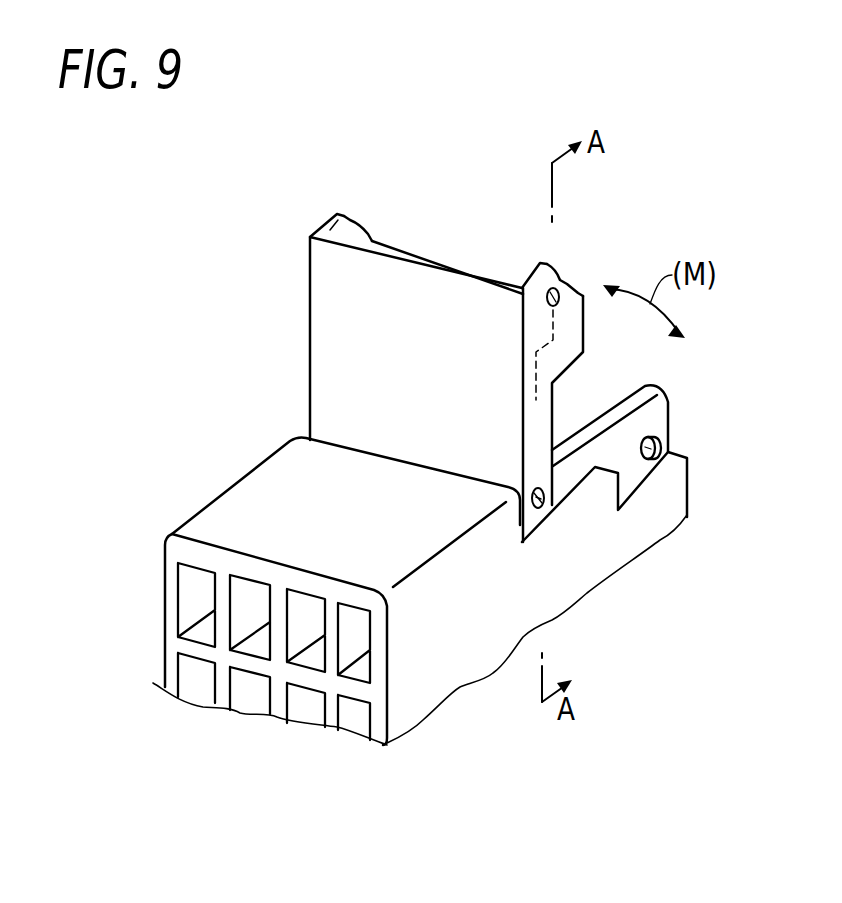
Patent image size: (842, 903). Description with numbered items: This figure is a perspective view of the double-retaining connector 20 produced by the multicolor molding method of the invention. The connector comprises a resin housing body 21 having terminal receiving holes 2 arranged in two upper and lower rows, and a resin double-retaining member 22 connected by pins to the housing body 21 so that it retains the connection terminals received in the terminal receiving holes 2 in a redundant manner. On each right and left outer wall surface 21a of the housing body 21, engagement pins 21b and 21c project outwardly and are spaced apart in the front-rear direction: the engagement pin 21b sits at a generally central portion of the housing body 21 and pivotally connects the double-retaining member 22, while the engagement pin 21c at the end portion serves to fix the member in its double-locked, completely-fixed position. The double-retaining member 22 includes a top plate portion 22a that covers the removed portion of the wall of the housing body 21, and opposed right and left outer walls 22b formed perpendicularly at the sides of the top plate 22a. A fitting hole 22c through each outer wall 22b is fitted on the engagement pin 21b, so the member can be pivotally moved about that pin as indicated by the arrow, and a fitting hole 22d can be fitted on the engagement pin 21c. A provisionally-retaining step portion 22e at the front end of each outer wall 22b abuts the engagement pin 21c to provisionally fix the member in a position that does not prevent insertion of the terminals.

The terminal receiving holes 2 is at (197, 672).
The double-retaining connector 20 is at (231, 488).
The housing body 21 is at (445, 683).
The outer wall surface 21a is at (523, 610).
The engagement pin 21b is at (552, 503).
The engagement pin 21c is at (665, 442).
The double-retaining member 22 is at (342, 320).
The top plate portion 22a is at (420, 283).
The outer wall 22b is at (325, 222).
The fitting hole 22c is at (540, 500).
The fitting hole 22d is at (554, 286).
The provisionally-retaining step portion 22e is at (355, 220).